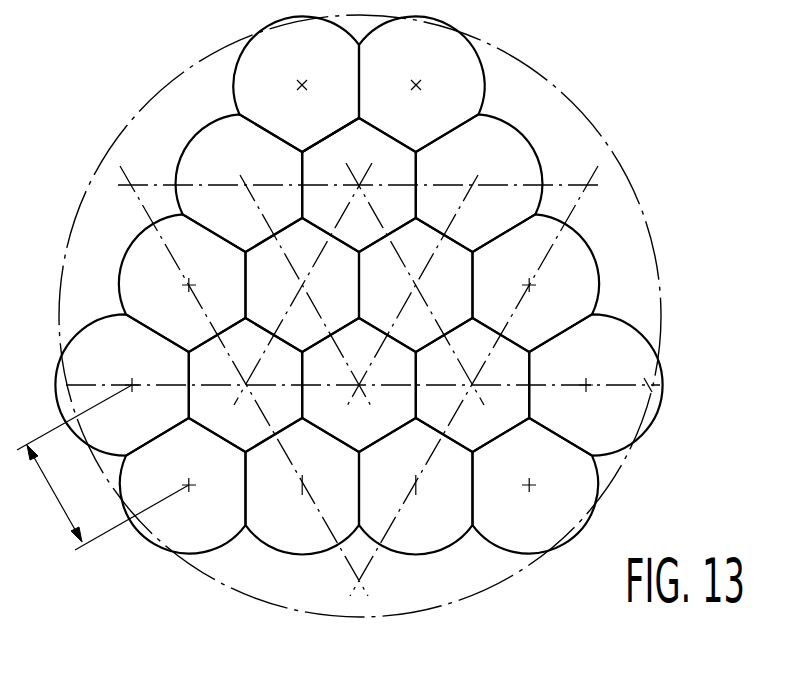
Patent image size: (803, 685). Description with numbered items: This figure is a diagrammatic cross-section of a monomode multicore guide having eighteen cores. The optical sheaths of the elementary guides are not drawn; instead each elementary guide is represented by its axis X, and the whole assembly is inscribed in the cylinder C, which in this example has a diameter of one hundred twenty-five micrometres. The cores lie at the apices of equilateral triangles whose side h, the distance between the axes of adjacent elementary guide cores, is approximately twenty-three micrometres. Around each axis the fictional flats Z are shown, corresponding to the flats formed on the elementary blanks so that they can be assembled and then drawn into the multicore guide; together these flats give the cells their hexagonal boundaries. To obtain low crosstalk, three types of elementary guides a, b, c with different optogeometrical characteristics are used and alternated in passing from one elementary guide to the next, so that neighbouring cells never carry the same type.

The elementary guide of first type a is at (359, 336).
The elementary guide of second type b is at (298, 285).
The elementary guide of third type c is at (419, 285).
The axis of elementary optical guide X is at (188, 284).
The fictional flat Z is at (270, 130).
The cylinder C is at (611, 147).
The distance between axes of adjacent cores h is at (103, 467).